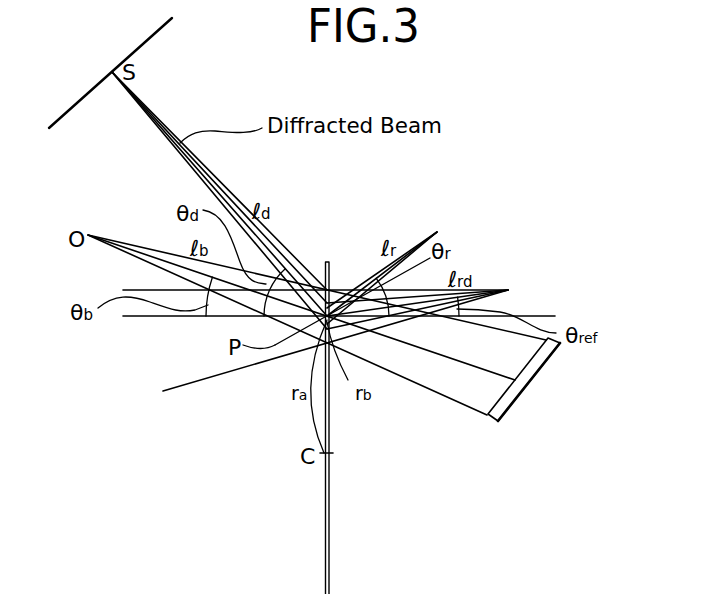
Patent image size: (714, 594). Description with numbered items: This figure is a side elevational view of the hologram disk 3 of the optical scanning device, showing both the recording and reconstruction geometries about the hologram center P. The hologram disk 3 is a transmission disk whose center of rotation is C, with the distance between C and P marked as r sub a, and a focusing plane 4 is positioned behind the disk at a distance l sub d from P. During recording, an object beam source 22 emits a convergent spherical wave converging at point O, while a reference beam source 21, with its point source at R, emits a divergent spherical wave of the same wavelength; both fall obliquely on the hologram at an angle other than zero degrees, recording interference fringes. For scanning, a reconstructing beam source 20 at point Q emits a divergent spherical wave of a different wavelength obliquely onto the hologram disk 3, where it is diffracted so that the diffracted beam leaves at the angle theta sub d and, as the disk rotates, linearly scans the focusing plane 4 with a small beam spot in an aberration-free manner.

The hologram disk 3 is at (330, 547).
The focusing plane 4 is at (150, 42).
The reconstructing beam source 20 is at (445, 229).
The reference beam source 21 is at (508, 289).
The object beam source 22 is at (505, 418).